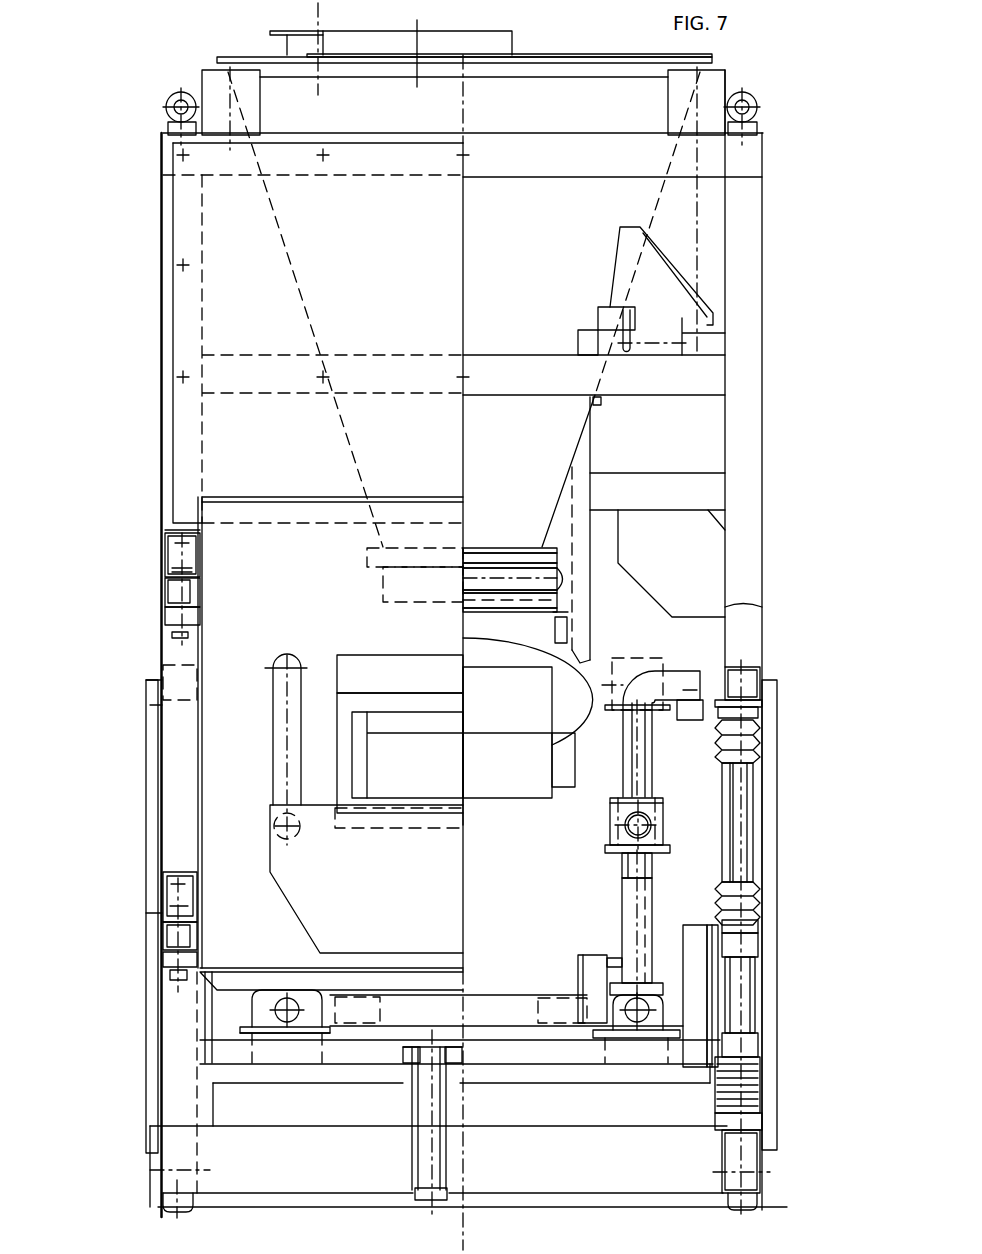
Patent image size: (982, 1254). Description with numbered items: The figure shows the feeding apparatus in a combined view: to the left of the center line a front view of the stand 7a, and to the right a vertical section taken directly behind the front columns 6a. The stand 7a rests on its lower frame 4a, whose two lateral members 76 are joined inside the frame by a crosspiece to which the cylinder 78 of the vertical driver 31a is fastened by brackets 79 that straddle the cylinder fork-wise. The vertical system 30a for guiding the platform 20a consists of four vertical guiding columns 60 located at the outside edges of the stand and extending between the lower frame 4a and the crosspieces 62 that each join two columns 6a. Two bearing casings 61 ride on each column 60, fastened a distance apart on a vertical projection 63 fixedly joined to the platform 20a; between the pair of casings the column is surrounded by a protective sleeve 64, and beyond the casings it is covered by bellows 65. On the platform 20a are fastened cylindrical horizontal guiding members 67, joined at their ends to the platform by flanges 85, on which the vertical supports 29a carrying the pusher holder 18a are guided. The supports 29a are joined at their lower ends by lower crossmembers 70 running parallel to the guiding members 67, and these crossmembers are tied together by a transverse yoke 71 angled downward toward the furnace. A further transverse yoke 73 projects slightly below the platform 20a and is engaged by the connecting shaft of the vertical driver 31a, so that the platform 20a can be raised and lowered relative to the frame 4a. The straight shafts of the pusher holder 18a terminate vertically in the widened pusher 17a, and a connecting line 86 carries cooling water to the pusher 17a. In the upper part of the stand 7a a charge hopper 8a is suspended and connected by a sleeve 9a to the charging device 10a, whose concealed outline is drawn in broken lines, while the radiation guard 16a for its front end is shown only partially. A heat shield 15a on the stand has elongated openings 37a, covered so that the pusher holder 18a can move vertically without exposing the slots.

The lower frame 4a is at (506, 1160).
The column 6a is at (747, 414).
The stand 7a is at (163, 269).
The charge hopper 8a is at (640, 207).
The sleeve 9a is at (552, 578).
The charging device 10a is at (483, 777).
The heat shield 15a is at (215, 648).
The radiation guard 16a is at (336, 701).
The pusher 17a is at (297, 897).
The pusher holder 18a is at (275, 828).
The platform 20a is at (550, 1057).
The vertical support 29a is at (632, 920).
The vertical system 30a is at (765, 966).
The vertical driver 31a is at (446, 1158).
The elongated opening 37a is at (272, 757).
The vertical guiding column 60 is at (742, 805).
The bearing casing 61 is at (747, 943).
The crosspiece 62 is at (177, 682).
The vertical projection 63 is at (697, 930).
The protective sleeve 64 is at (747, 988).
The bellows 65 is at (745, 748).
The horizontal guiding member 67 is at (280, 1010).
The lower crossmember 70 is at (613, 960).
The transverse yoke 71 is at (455, 998).
The transverse yoke 73 is at (352, 1083).
The lateral member 76 is at (752, 1163).
The cylinder 78 is at (427, 1110).
The bracket 79 is at (410, 1115).
The flange 85 is at (262, 1030).
The connecting line 86 is at (640, 757).